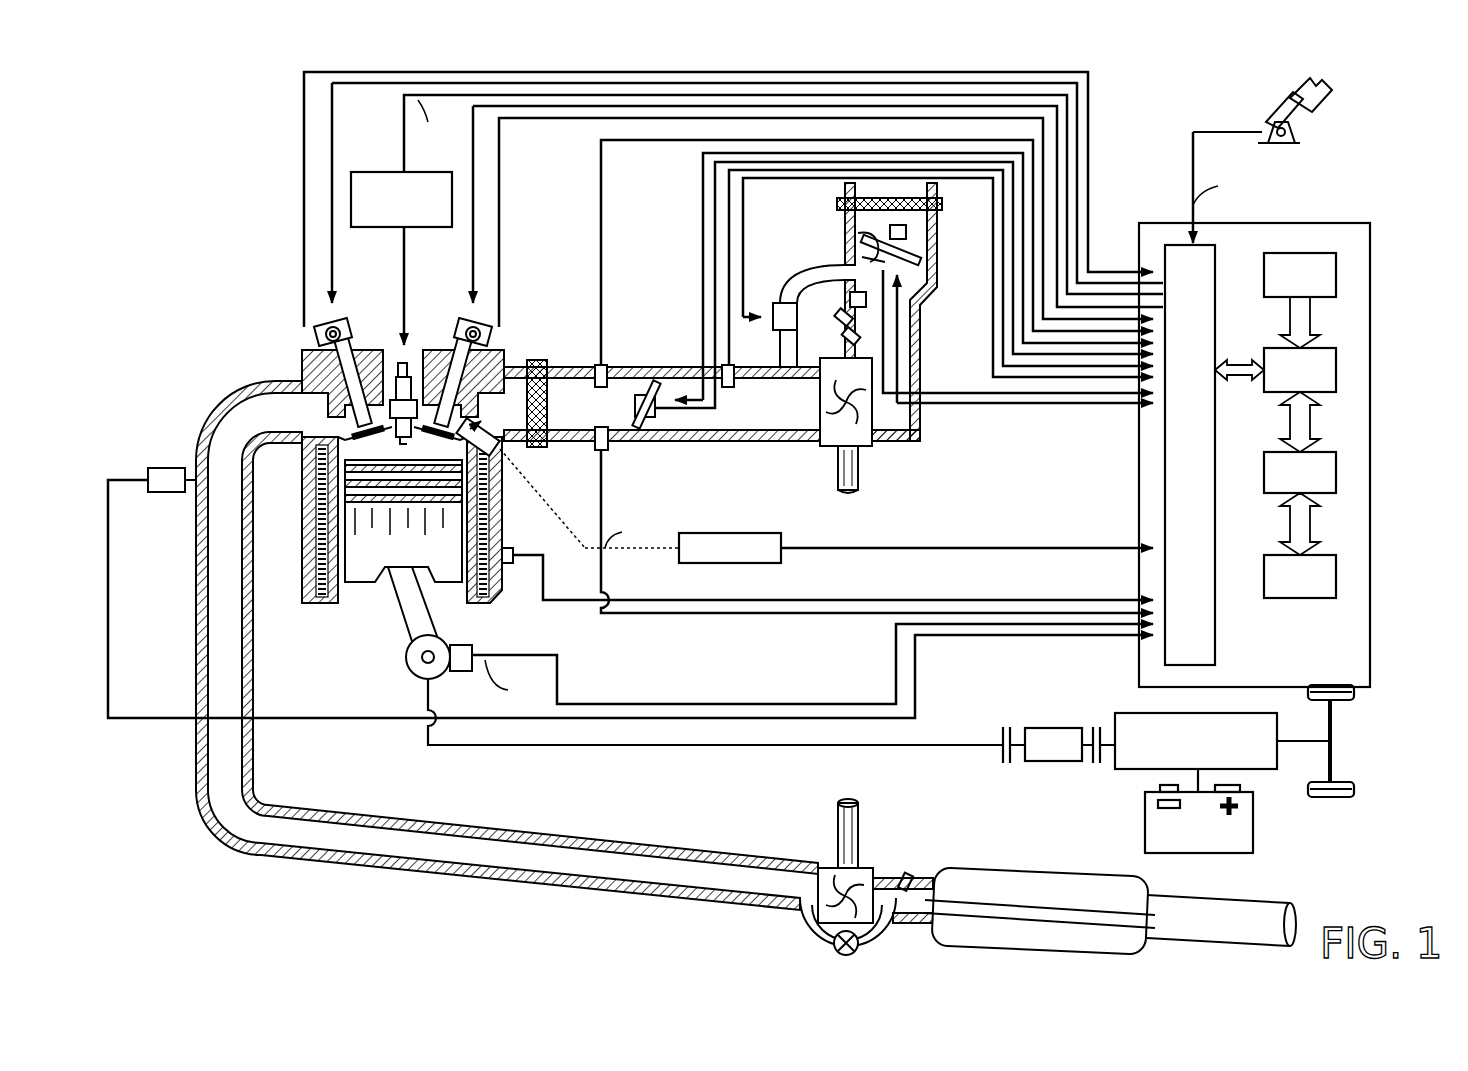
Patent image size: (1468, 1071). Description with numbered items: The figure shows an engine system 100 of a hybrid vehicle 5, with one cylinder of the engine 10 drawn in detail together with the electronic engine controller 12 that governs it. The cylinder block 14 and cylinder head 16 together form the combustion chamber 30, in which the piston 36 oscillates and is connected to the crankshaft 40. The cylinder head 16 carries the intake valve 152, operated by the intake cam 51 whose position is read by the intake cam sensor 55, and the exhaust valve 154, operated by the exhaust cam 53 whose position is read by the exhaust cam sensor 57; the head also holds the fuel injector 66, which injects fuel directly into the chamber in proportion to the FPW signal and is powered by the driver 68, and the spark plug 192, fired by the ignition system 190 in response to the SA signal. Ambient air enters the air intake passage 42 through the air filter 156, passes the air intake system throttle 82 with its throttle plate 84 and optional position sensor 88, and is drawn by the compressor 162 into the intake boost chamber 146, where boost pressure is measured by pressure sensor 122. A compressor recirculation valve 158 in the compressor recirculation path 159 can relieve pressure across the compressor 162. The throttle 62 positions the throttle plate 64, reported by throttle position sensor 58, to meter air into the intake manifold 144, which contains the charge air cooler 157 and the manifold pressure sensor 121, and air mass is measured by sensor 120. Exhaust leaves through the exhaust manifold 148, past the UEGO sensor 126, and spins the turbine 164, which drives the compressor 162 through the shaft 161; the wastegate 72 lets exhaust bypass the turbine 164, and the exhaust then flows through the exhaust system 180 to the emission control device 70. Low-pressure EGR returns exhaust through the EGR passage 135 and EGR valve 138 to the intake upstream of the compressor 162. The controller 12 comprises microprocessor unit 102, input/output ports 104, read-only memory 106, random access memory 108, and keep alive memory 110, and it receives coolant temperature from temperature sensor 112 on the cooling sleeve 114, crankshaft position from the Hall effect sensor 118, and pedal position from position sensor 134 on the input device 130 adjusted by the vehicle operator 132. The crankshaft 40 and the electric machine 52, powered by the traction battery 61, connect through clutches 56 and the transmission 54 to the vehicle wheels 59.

The engine system 100 is at (152, 130).
The engine 10 is at (232, 280).
The electronic engine controller 12 is at (1362, 225).
The cylinder block 14 is at (407, 568).
The cylinder head 16 is at (520, 356).
The combustion chamber 30 is at (314, 558).
The piston 36 is at (388, 580).
The crankshaft 40 is at (415, 675).
The air intake passage 42 is at (891, 312).
The intake cam 51 is at (472, 320).
The electric machine 52 is at (1052, 762).
The exhaust cam 53 is at (335, 320).
The transmission 54 is at (1255, 769).
The intake cam sensor 55 is at (478, 345).
The clutch 56 is at (1003, 735).
The exhaust cam sensor 57 is at (331, 345).
The throttle position sensor 58 is at (660, 420).
The vehicle wheels 59 is at (1335, 798).
The traction battery 61 is at (1193, 853).
The throttle 62 is at (666, 374).
The throttle plate 64 is at (660, 382).
The fuel injector 66 is at (495, 450).
The driver 68 is at (765, 533).
The emission control device 70 is at (930, 940).
The wastegate 72 is at (832, 948).
The air intake system throttle 82 is at (865, 250).
The throttle plate 84 is at (858, 236).
The position sensor 88 is at (862, 257).
The microprocessor unit 102 is at (1338, 370).
The input/output ports 104 is at (1216, 254).
The read-only memory 106 is at (1338, 272).
The random access memory 108 is at (1338, 473).
The keep alive memory 110 is at (1338, 577).
The temperature sensor 112 is at (512, 550).
The cooling sleeve 114 is at (498, 590).
The Hall effect sensor 118 is at (462, 671).
The air mass sensor 120 is at (604, 450).
The pressure sensor 121 is at (601, 362).
The pressure sensor 122 is at (733, 375).
The UEGO sensor 126 is at (148, 472).
The input device 130 is at (1262, 105).
The vehicle operator 132 is at (1316, 90).
The position sensor 134 is at (1297, 132).
The EGR passage 135 is at (852, 335).
The EGR valve 138 is at (850, 298).
The intake manifold 144 is at (712, 404).
The intake boost chamber 146 is at (741, 407).
The exhaust manifold 148 is at (293, 428).
The intake valve 152 is at (440, 430).
The exhaust valve 154 is at (345, 415).
The air filter 156 is at (942, 204).
The charge air cooler 157 is at (540, 448).
The compressor recirculation valve 158 is at (778, 305).
The compressor recirculation path 159 is at (798, 355).
The shaft 161 is at (860, 470).
The compressor 162 is at (868, 446).
The turbine 164 is at (825, 868).
The exhaust system 180 is at (462, 900).
The ignition system 190 is at (390, 172).
The spark plug 192 is at (408, 345).
The vehicle 5 is at (1390, 730).